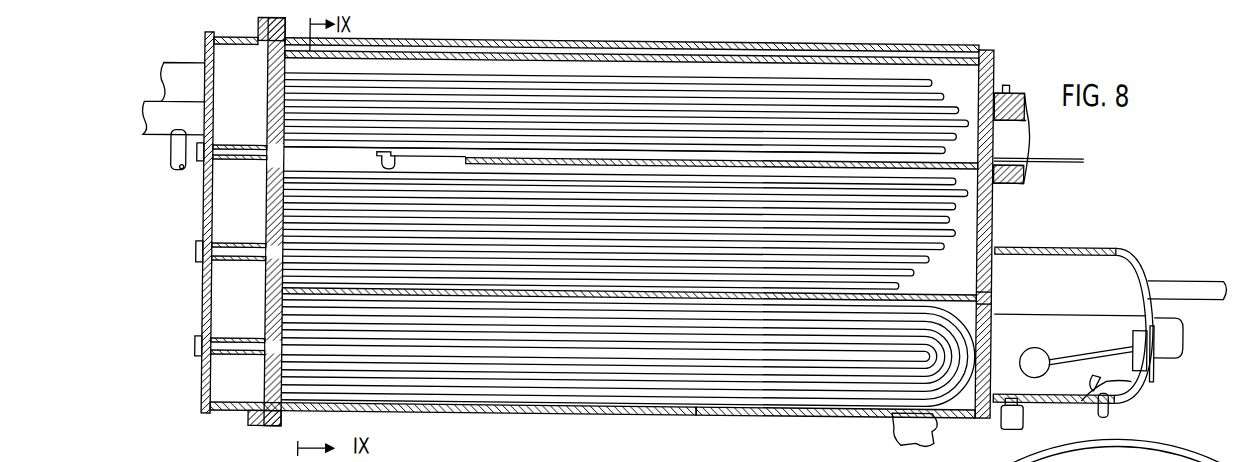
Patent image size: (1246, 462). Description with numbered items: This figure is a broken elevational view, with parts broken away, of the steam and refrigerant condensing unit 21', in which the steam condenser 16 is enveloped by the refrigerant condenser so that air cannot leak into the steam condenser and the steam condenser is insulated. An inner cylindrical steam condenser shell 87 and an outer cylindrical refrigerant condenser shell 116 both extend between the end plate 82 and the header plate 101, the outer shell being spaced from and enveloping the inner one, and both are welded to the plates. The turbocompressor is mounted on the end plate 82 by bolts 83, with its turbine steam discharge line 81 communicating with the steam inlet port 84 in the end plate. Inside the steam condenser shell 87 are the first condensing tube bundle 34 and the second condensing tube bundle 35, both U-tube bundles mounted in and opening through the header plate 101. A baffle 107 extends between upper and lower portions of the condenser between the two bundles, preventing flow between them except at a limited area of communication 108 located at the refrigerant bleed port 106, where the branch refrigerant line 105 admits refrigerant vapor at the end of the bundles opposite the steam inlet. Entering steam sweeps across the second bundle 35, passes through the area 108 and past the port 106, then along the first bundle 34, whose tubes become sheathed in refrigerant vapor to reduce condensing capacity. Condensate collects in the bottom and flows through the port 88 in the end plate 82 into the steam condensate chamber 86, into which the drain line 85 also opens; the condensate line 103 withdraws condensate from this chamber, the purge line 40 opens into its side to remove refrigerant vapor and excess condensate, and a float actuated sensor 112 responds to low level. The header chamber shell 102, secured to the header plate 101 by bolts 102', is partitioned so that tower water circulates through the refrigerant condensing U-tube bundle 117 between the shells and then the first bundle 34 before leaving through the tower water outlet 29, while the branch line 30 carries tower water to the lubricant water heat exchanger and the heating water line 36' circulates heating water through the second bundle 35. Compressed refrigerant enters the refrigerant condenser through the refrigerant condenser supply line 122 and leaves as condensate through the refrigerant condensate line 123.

The steam condenser 16 is at (678, 56).
The condensing unit 21' is at (453, 430).
The tower water outlet line 29 is at (177, 130).
The branch line 30 is at (173, 150).
The first condensing tube bundle 34 is at (928, 252).
The second condensing tube bundle 35 is at (524, 70).
The heating water line 36' is at (182, 70).
The purge line 40 is at (1111, 402).
The turbine steam discharge line 81 is at (1020, 108).
The end plate 82 is at (990, 211).
The bolts 83 is at (1008, 80).
The steam inlet port 84 is at (990, 141).
The drain line 85 is at (1197, 279).
The steam condensate chamber 86 is at (1078, 277).
The steam condenser shell 87 is at (864, 50).
The port 88 is at (993, 289).
The header plate 101 is at (285, 413).
The header chamber shell 102 is at (204, 380).
The bolts 102' is at (203, 254).
The condensate line 103 is at (1020, 410).
The branch refrigerant line 105 is at (463, 152).
The refrigerant bleed port 106 is at (395, 170).
The baffle 107 is at (612, 155).
The area of limited communication 108 is at (347, 152).
The float actuated sensor 112 is at (1108, 343).
The refrigerant condenser shell 116 is at (767, 411).
The refrigerant condensing U-tube bundle 117 is at (826, 366).
The refrigerant condenser supply line 122 is at (1174, 325).
The refrigerant condensate line 123 is at (894, 421).